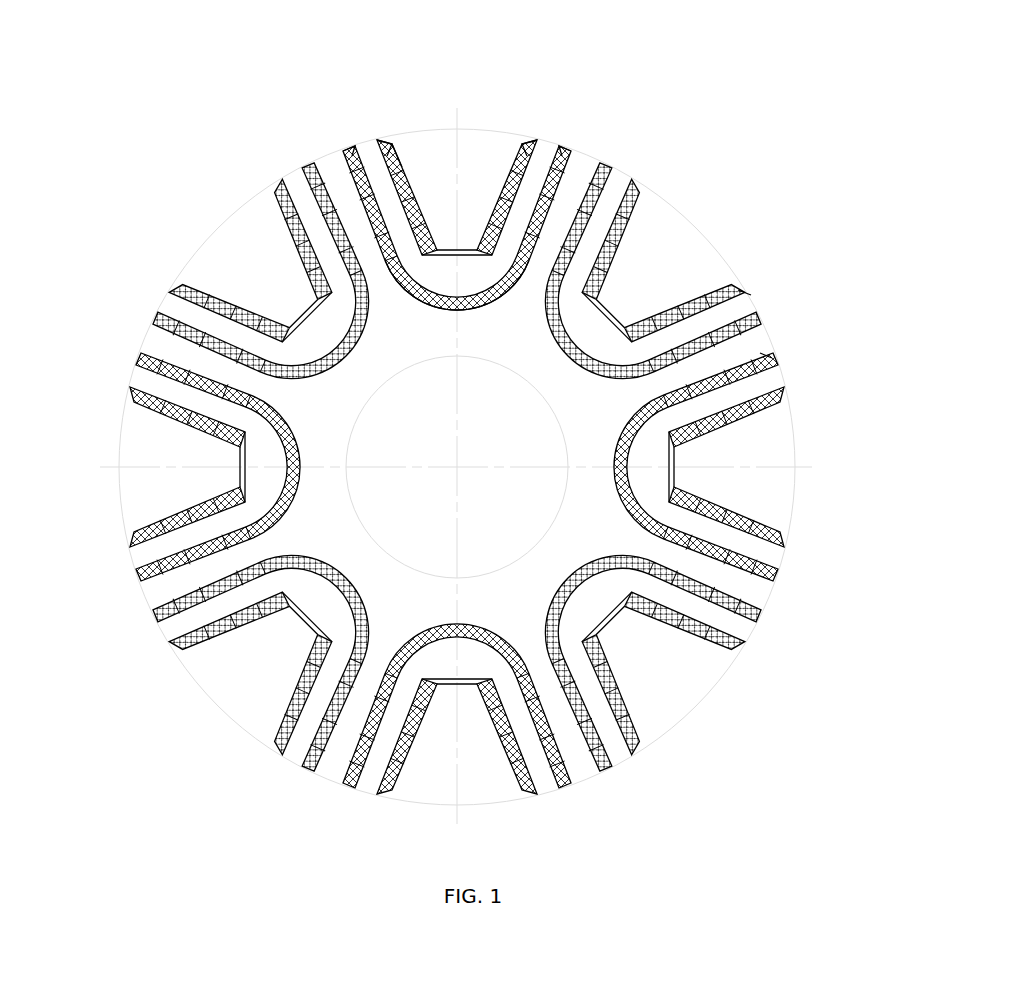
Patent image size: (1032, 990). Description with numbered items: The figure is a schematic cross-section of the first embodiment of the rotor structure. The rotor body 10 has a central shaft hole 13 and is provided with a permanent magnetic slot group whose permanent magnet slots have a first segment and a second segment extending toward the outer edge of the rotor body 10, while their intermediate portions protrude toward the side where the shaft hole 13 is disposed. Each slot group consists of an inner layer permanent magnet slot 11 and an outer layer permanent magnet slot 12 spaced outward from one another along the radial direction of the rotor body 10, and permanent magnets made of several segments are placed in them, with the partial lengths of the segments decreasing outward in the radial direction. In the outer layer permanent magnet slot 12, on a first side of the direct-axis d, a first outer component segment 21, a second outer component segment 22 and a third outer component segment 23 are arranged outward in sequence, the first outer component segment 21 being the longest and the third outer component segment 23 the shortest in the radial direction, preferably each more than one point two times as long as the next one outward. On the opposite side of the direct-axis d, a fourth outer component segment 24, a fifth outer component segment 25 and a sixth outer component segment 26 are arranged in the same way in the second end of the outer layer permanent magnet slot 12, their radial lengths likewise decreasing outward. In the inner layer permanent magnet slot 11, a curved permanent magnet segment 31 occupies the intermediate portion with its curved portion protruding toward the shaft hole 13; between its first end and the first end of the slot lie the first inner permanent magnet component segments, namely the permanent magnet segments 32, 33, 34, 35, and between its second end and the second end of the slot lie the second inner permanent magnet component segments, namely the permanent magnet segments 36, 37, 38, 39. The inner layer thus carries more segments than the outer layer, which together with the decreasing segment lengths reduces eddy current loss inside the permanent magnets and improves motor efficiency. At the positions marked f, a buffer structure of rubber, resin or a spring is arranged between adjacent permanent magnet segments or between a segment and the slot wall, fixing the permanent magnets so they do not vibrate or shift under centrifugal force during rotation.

The rotor body 10 is at (655, 660).
The inner layer permanent magnet slot 11 is at (506, 294).
The outer layer permanent magnet slot 12 is at (410, 295).
The shaft hole 13 is at (417, 528).
The first outer component segment 21 is at (507, 138).
The second outer component segment 22 is at (480, 190).
The third outer component segment 23 is at (548, 104).
The fourth outer component segment 24 is at (426, 128).
The fifth outer component segment 25 is at (402, 92).
The sixth outer component segment 26 is at (357, 93).
The curved permanent magnet segment 31 is at (231, 293).
The permanent magnet segment 32 is at (294, 119).
The permanent magnet segment 33 is at (286, 149).
The permanent magnet segment 34 is at (268, 184).
The permanent magnet segment 35 is at (251, 240).
The permanent magnet segment 36 is at (643, 150).
The permanent magnet segment 37 is at (613, 160).
The permanent magnet segment 38 is at (585, 174).
The permanent magnet segment 39 is at (611, 111).
The direct-axis d is at (456, 453).
The buffer structure f is at (745, 292).